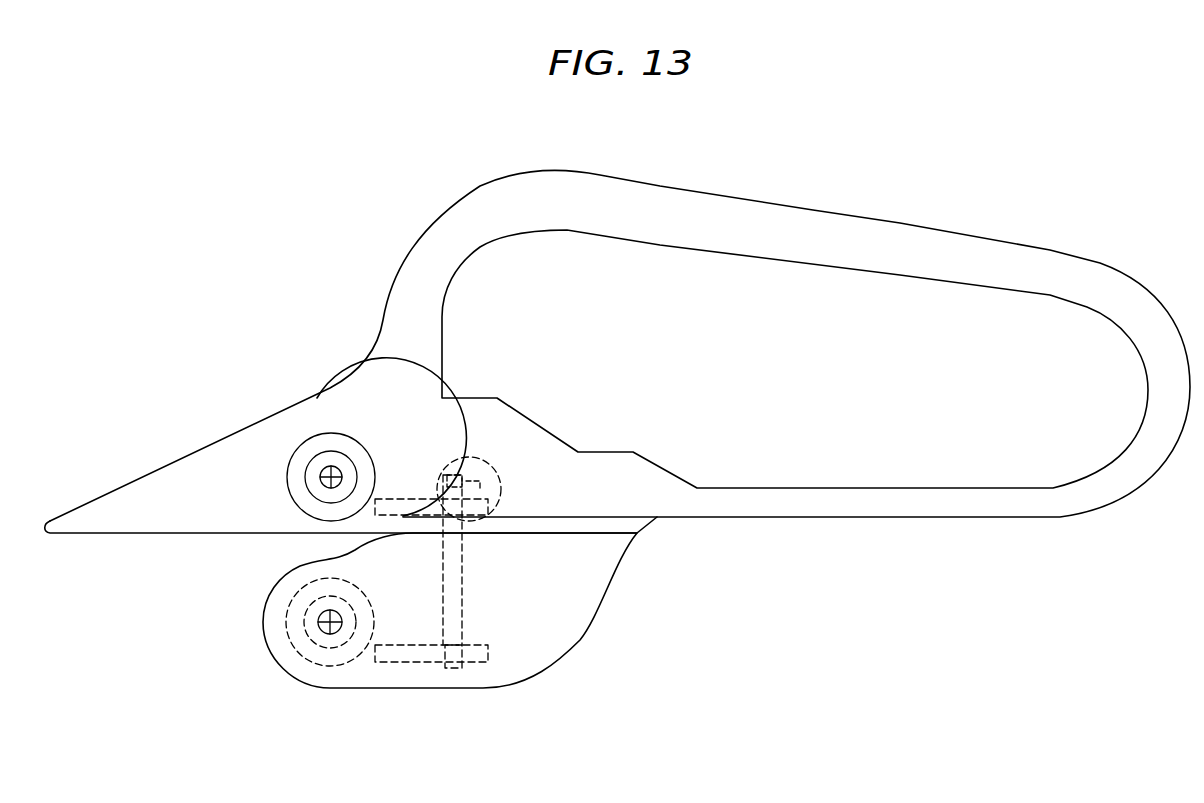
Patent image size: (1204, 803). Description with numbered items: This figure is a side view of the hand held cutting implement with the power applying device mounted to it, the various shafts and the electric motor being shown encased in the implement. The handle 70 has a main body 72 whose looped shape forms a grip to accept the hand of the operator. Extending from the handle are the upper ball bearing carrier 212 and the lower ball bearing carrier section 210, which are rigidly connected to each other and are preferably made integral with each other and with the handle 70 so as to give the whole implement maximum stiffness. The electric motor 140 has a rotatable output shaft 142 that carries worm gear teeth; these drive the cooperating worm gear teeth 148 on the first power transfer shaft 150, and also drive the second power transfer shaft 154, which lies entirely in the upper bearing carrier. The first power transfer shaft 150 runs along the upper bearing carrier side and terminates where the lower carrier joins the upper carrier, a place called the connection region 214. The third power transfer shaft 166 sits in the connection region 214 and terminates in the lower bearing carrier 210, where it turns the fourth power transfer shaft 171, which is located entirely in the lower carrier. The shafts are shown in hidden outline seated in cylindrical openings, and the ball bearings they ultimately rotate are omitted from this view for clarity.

The handle 70 is at (757, 186).
The main body 72 is at (467, 190).
The electric motor 140 is at (470, 458).
The rotatable output shaft 142 is at (473, 487).
The worm gear teeth 148 is at (442, 477).
The first power transfer shaft 150 is at (463, 558).
The second power transfer shaft 154 is at (375, 518).
The third power transfer shaft 166 is at (467, 633).
The fourth power transfer shaft 171 is at (410, 662).
The lower ball bearing carrier section 210 is at (493, 677).
The upper ball bearing carrier 212 is at (230, 455).
The connection region 214 is at (588, 560).